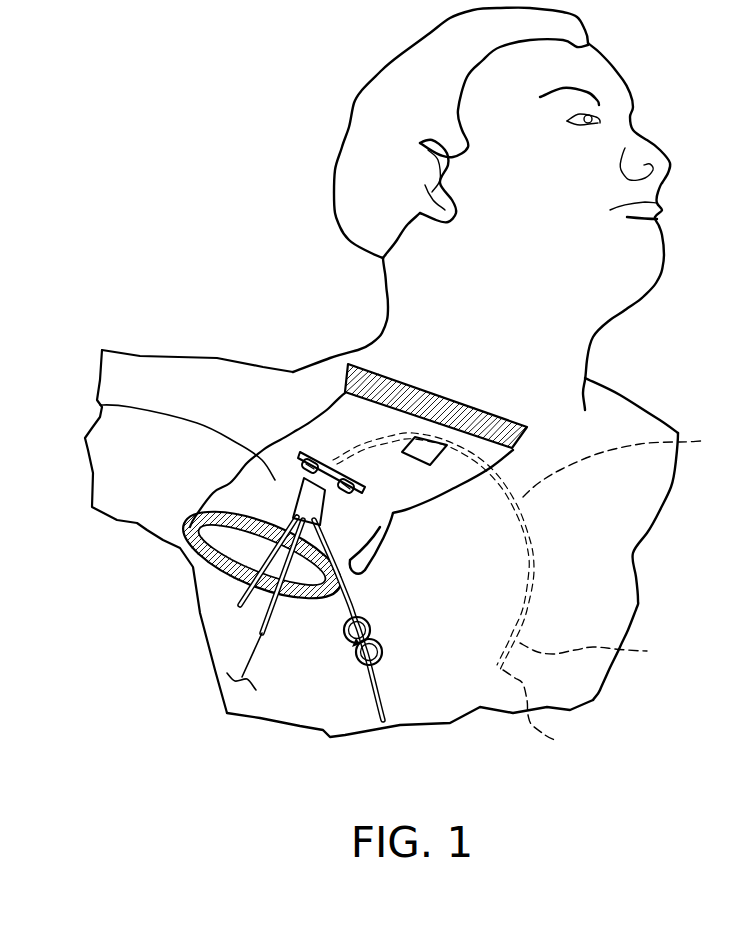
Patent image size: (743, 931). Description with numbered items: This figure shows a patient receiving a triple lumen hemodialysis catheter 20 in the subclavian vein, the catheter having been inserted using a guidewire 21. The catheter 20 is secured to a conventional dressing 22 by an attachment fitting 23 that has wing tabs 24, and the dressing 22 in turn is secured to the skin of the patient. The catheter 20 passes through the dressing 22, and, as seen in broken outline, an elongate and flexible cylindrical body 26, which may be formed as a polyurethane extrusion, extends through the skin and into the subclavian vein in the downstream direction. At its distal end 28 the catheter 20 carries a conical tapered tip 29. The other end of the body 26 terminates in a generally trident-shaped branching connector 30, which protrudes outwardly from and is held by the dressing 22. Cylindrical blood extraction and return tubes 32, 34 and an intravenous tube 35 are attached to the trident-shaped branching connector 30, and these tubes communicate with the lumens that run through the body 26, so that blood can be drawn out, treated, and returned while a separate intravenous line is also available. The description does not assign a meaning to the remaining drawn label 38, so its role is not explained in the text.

The triple lumen catheter 20 is at (299, 506).
The guidewire 21 is at (250, 657).
The dressing 22 is at (323, 453).
The attachment fitting 23 is at (300, 377).
The wing tabs 24 is at (298, 486).
The cylindrical body 26 is at (702, 441).
The distal end 28 is at (597, 653).
The conical tapered tip 29 is at (543, 712).
The trident-shaped branching connector 30 is at (97, 403).
The blood extraction tube 32 is at (245, 592).
The blood return tube 34 is at (390, 706).
The intravenous (IV) tube 35 is at (270, 620).
The tube clamp 38 is at (347, 660).